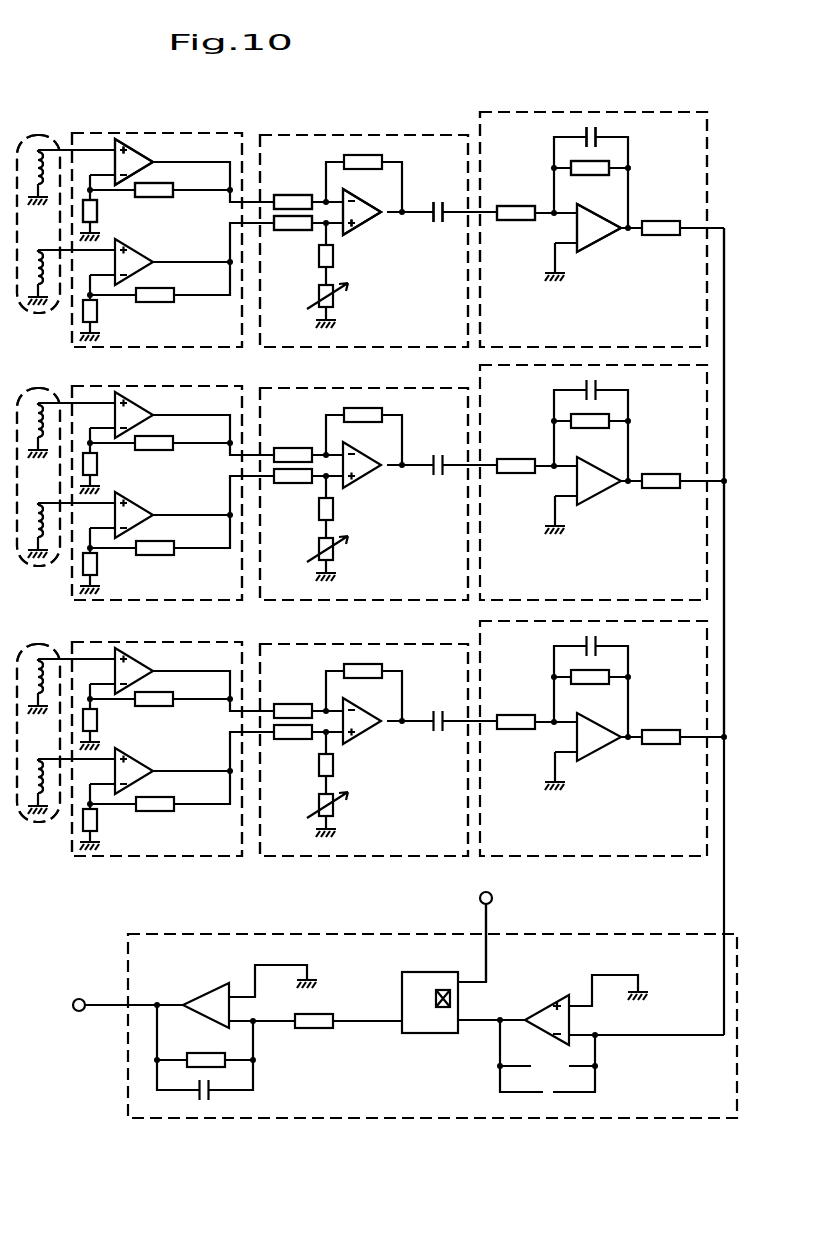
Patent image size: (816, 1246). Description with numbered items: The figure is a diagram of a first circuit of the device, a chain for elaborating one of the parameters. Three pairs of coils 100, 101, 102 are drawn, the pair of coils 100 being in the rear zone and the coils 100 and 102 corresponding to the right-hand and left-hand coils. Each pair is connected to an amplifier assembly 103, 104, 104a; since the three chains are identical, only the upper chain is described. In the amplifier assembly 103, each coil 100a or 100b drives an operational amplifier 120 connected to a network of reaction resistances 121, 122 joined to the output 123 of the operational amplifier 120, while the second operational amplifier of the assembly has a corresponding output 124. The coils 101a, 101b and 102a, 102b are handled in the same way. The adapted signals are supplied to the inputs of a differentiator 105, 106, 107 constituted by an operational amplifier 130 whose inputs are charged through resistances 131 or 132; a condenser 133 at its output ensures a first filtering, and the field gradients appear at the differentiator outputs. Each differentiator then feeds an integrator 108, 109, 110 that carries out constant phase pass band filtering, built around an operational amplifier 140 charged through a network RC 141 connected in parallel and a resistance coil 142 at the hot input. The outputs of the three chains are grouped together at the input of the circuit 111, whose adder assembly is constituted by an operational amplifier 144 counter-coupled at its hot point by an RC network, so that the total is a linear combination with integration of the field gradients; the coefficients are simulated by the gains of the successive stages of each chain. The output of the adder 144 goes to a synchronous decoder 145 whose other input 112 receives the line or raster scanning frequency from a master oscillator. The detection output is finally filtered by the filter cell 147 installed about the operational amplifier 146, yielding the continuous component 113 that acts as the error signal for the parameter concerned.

The pair of coils 100 is at (45, 135).
The coil 100a is at (46, 190).
The coil 100b is at (46, 255).
The pair of coils 101 is at (48, 390).
The coil 101a is at (46, 443).
The coil 101b is at (46, 508).
The pair of coils 102 is at (35, 645).
The coil 102a is at (46, 699).
The coil 102b is at (46, 764).
The amplifier assembly 103 is at (205, 133).
The amplifier assembly 104 is at (188, 393).
The amplifier assembly 104a is at (183, 648).
The differentiator 105 is at (368, 135).
The differentiator 106 is at (372, 390).
The differentiator 107 is at (385, 644).
The filter 108 is at (638, 112).
The integrator 109 is at (724, 373).
The integrator 110 is at (724, 667).
The circuit 111 is at (200, 935).
The master oscillator input 112 is at (493, 900).
The signal 113 is at (78, 1000).
The operational amplifier 120 is at (150, 150).
The reaction resistance 121 is at (98, 213).
The reaction resistance 122 is at (154, 199).
The output 123 is at (231, 199).
The output 124 is at (229, 228).
The operational amplifier 130 is at (370, 225).
The resistance 131 is at (275, 195).
The resistance 132 is at (291, 230).
The condenser 133 is at (430, 204).
The operational amplifier 140 is at (606, 214).
The network RC 141 is at (545, 170).
The resistance coil 142 is at (518, 224).
The operational amplifier 144 is at (545, 1006).
The synchronous decoder 145 is at (422, 972).
The operational amplifier 146 is at (208, 996).
The filter cell 147 is at (265, 1084).